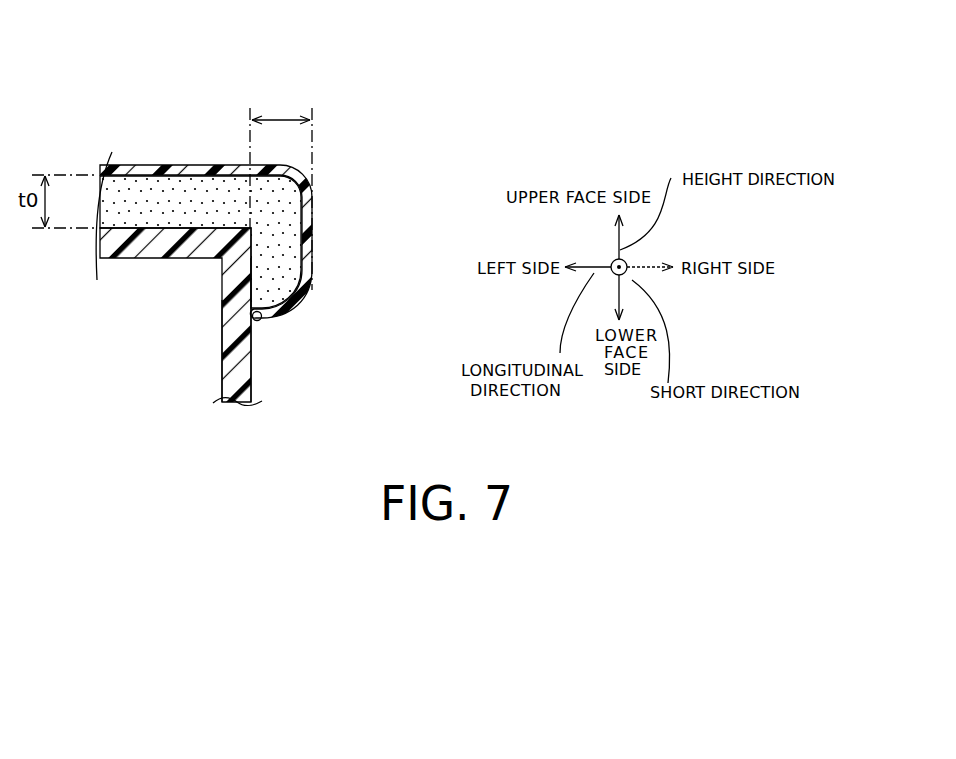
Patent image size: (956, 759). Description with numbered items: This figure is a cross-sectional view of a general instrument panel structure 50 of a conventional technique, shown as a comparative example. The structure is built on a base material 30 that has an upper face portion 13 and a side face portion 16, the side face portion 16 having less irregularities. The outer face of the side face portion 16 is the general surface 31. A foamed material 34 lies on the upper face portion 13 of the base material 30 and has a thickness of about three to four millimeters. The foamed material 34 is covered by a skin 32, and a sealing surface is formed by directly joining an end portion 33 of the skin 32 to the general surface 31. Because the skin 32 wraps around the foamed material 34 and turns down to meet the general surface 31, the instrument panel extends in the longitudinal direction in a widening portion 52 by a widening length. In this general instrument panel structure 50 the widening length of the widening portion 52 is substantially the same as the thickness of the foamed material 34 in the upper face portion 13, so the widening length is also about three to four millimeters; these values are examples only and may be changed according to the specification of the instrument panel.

The upper face portion 13 is at (147, 259).
The side face portion 16 is at (222, 376).
The base material 30 is at (198, 320).
The general surface 31 is at (250, 372).
The skin 32 is at (190, 168).
The end portion 33 is at (266, 321).
The foamed material 34 is at (155, 200).
The general instrument panel structure 50 is at (256, 239).
The widening portion 52 is at (290, 81).